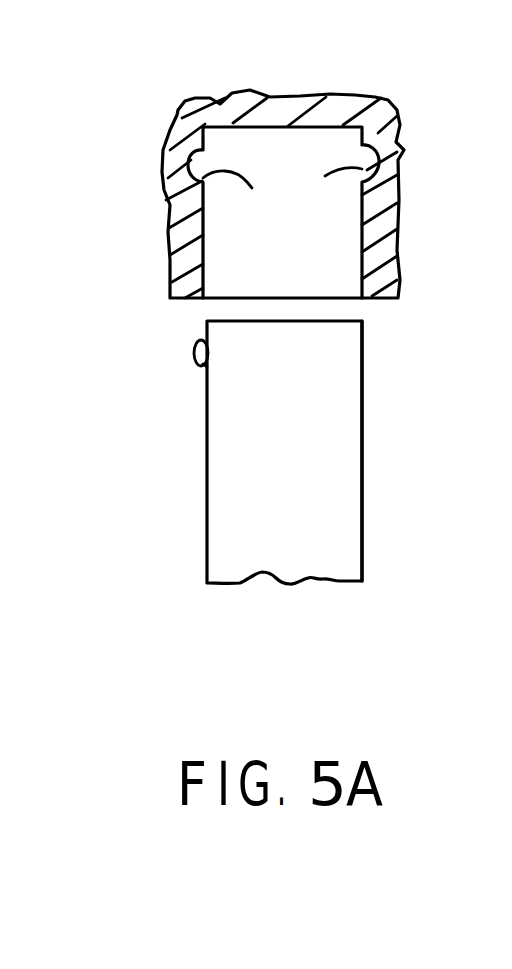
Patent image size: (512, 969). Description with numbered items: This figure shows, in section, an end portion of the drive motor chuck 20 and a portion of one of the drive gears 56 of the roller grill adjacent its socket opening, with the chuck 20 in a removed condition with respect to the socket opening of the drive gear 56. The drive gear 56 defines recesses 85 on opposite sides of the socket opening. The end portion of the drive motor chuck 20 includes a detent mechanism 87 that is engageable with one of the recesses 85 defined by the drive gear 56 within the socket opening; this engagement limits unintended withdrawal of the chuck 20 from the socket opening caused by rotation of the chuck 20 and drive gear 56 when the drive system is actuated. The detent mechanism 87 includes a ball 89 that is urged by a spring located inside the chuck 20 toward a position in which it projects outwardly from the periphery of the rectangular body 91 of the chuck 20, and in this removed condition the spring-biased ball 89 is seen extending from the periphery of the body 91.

The drive gear 56 is at (292, 108).
The recess 85 is at (325, 176).
The ball 89 is at (196, 349).
The detent mechanism 87 is at (182, 375).
The rectangular body 91 is at (360, 408).
The drive motor chuck 20 is at (243, 505).